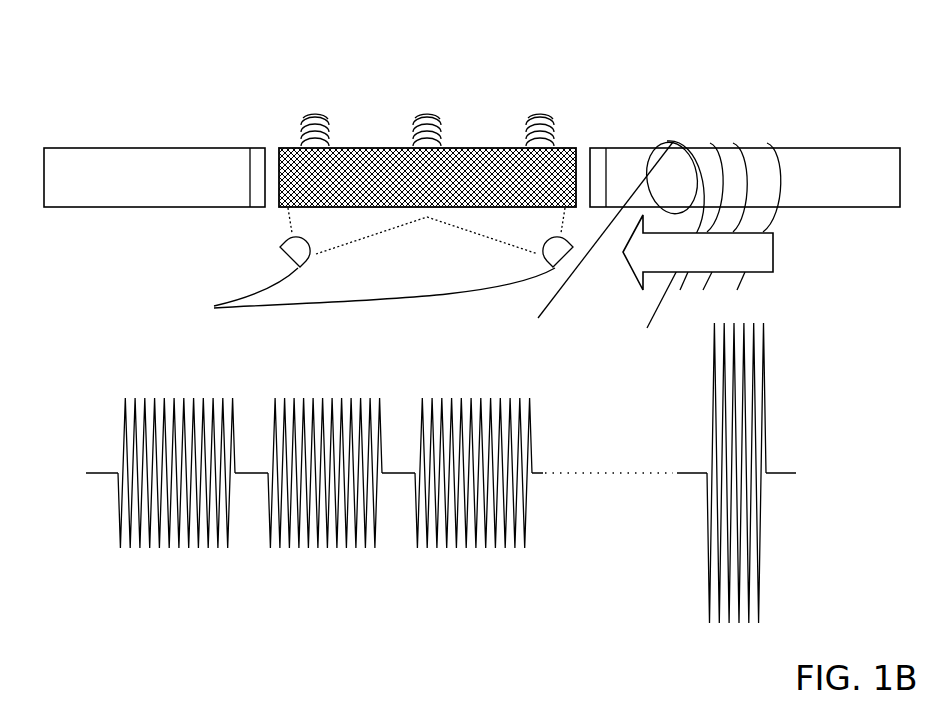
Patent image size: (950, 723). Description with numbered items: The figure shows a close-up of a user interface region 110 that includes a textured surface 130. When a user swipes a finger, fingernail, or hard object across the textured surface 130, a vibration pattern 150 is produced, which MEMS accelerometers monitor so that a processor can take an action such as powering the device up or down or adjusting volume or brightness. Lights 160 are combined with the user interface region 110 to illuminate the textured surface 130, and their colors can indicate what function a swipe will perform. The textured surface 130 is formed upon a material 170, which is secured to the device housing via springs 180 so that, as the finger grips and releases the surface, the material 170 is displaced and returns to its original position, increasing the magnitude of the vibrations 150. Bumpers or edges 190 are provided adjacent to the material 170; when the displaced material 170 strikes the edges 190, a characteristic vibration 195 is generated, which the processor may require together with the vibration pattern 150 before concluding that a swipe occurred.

The user interface region 110 is at (490, 68).
The textured surface 130 is at (563, 147).
The vibration pattern 150 is at (144, 366).
The lights 160 is at (365, 264).
The material 170 is at (280, 146).
The springs 180 is at (417, 96).
The bumpers or stops or edges 190 is at (264, 147).
The characteristic vibration 195 is at (797, 318).